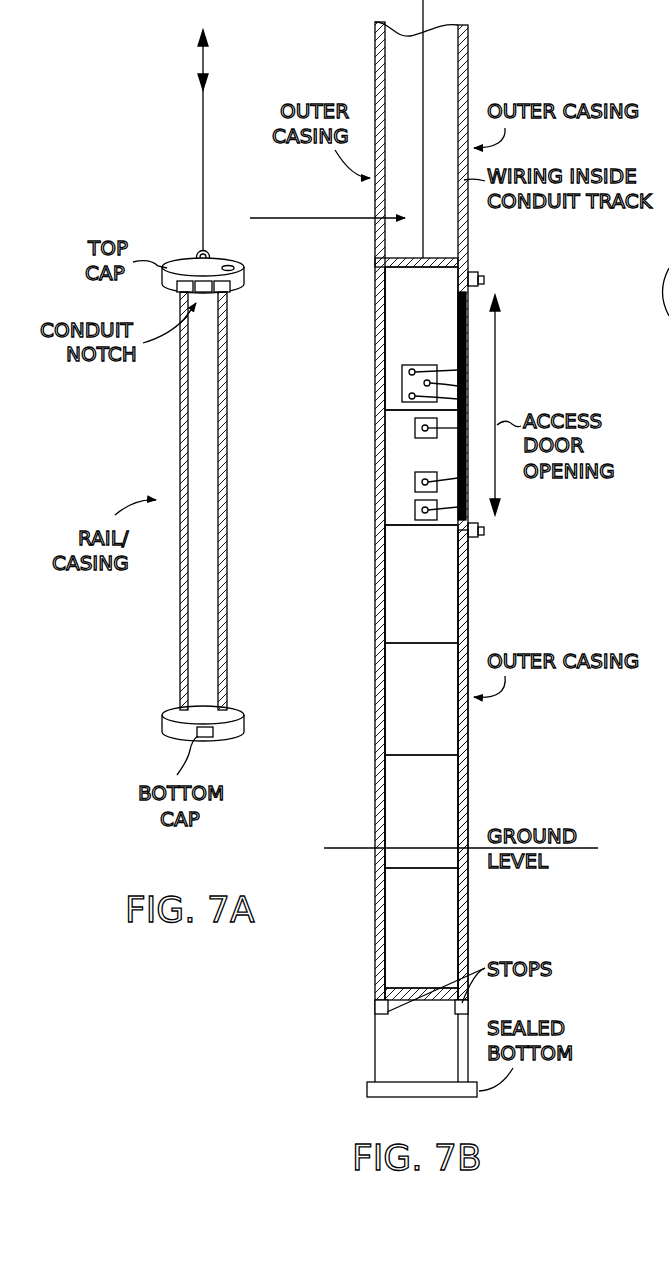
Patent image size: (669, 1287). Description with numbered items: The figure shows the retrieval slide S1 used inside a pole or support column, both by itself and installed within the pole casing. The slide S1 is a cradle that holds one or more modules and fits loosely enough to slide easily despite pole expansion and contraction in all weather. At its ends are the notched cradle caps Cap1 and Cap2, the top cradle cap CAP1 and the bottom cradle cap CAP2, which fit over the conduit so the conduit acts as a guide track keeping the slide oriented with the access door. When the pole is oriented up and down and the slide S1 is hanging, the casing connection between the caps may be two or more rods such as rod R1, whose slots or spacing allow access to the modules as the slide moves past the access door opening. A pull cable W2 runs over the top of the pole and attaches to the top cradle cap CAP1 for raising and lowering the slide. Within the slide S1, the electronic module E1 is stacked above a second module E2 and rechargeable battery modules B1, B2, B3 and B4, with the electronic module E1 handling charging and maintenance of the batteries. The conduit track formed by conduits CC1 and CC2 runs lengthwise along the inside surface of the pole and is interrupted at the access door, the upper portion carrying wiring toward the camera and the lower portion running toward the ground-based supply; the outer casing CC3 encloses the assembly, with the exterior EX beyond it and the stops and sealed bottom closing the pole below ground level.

In FIG. 7A, the pull cable W2 is at (196, 160).
In FIG. 7A, the top cradle cap CAP1 is at (225, 262).
In FIG. 7A, the bottom cradle cap CAP2 is at (163, 723).
In FIG. 7A, the retrieval slide S1 is at (199, 501).
In FIG. 7B, the retrieval slide S1 is at (421, 338).
In FIG. 7A, the rod R1 is at (243, 501).
In FIG. 7B, the conduit track CC1 is at (464, 62).
In FIG. 7B, the conduit track CC2 is at (466, 609).
In FIG. 7B, the outer casing CC3 is at (377, 645).
In FIG. 7B, the electronic module E1 is at (430, 361).
In FIG. 7B, the electronics compartment 2 E2 is at (421, 467).
In FIG. 7B, the battery module B1 is at (421, 584).
In FIG. 7B, the battery module B2 is at (421, 699).
In FIG. 7B, the battery module B3 is at (421, 811).
In FIG. 7B, the battery module B4 is at (421, 928).
In FIG. 7B, the exterior EX is at (657, 815).